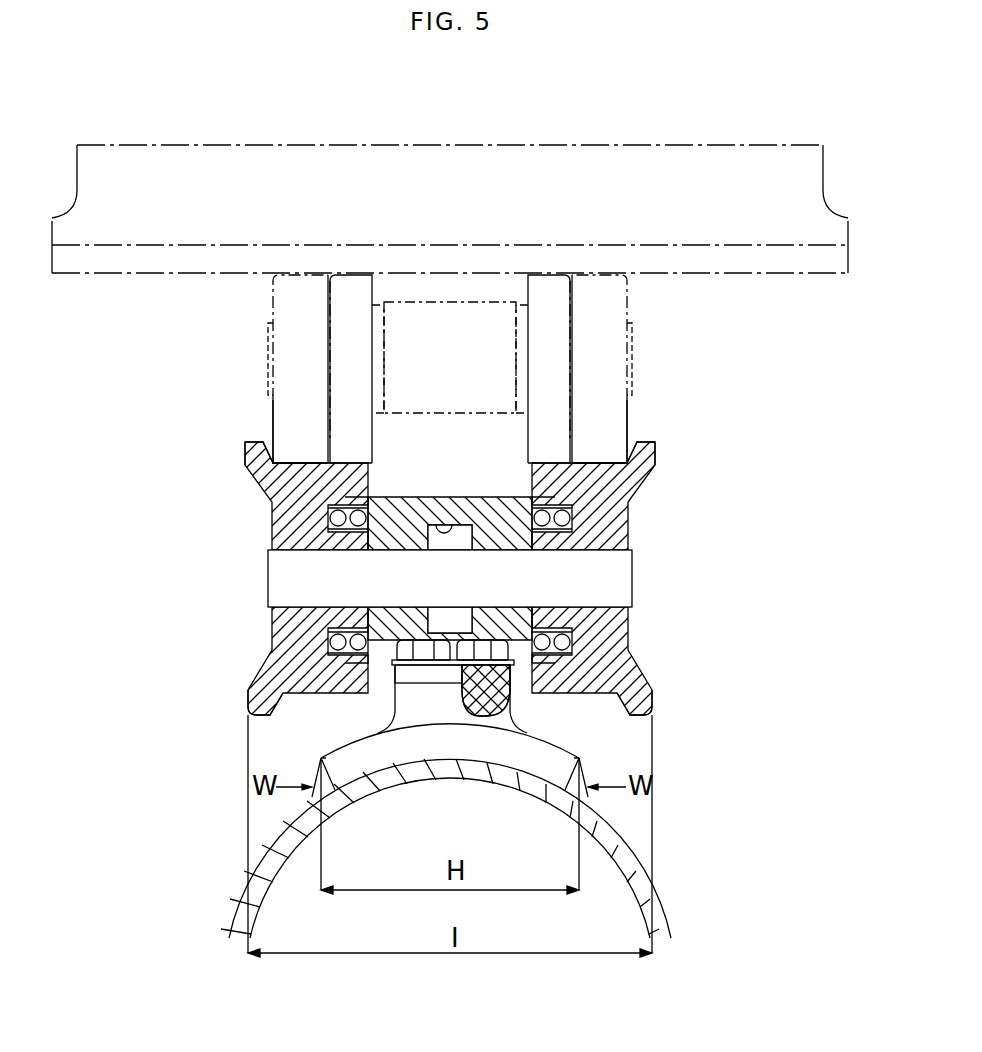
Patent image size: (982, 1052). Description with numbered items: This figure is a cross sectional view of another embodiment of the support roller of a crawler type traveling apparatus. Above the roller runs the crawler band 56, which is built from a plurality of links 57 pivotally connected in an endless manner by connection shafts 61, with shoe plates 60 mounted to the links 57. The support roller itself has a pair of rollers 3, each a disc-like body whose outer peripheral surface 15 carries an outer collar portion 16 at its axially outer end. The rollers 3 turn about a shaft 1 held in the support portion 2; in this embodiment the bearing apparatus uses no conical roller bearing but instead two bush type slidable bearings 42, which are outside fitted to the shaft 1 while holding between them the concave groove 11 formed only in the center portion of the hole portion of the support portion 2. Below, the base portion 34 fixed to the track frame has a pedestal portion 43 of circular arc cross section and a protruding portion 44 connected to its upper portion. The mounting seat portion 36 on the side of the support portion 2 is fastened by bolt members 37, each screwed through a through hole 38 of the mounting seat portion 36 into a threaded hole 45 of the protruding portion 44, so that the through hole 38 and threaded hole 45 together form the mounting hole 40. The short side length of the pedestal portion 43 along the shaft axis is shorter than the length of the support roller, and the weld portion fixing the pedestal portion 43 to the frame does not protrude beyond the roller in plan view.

The shaft 1 is at (636, 577).
The support portion 2 is at (455, 494).
The roller 3 is at (268, 515).
The concave groove 11 is at (443, 530).
The outer peripheral surface 15 is at (322, 460).
The outer collar portion 16 is at (258, 447).
The base portion 34 is at (570, 733).
The mounting seat portion 36 is at (420, 670).
The bolt member 37 is at (422, 640).
The through hole 38 is at (482, 640).
The mounting hole 40 is at (498, 705).
The bush type slidable bearing 42 is at (397, 537).
The pedestal portion 43 is at (384, 755).
The protruding portion 44 is at (393, 712).
The threaded hole 45 is at (483, 697).
The crawler band 56 is at (166, 330).
The link 57 is at (302, 273).
The shoe plate 60 is at (778, 265).
The connection shaft 61 is at (457, 300).